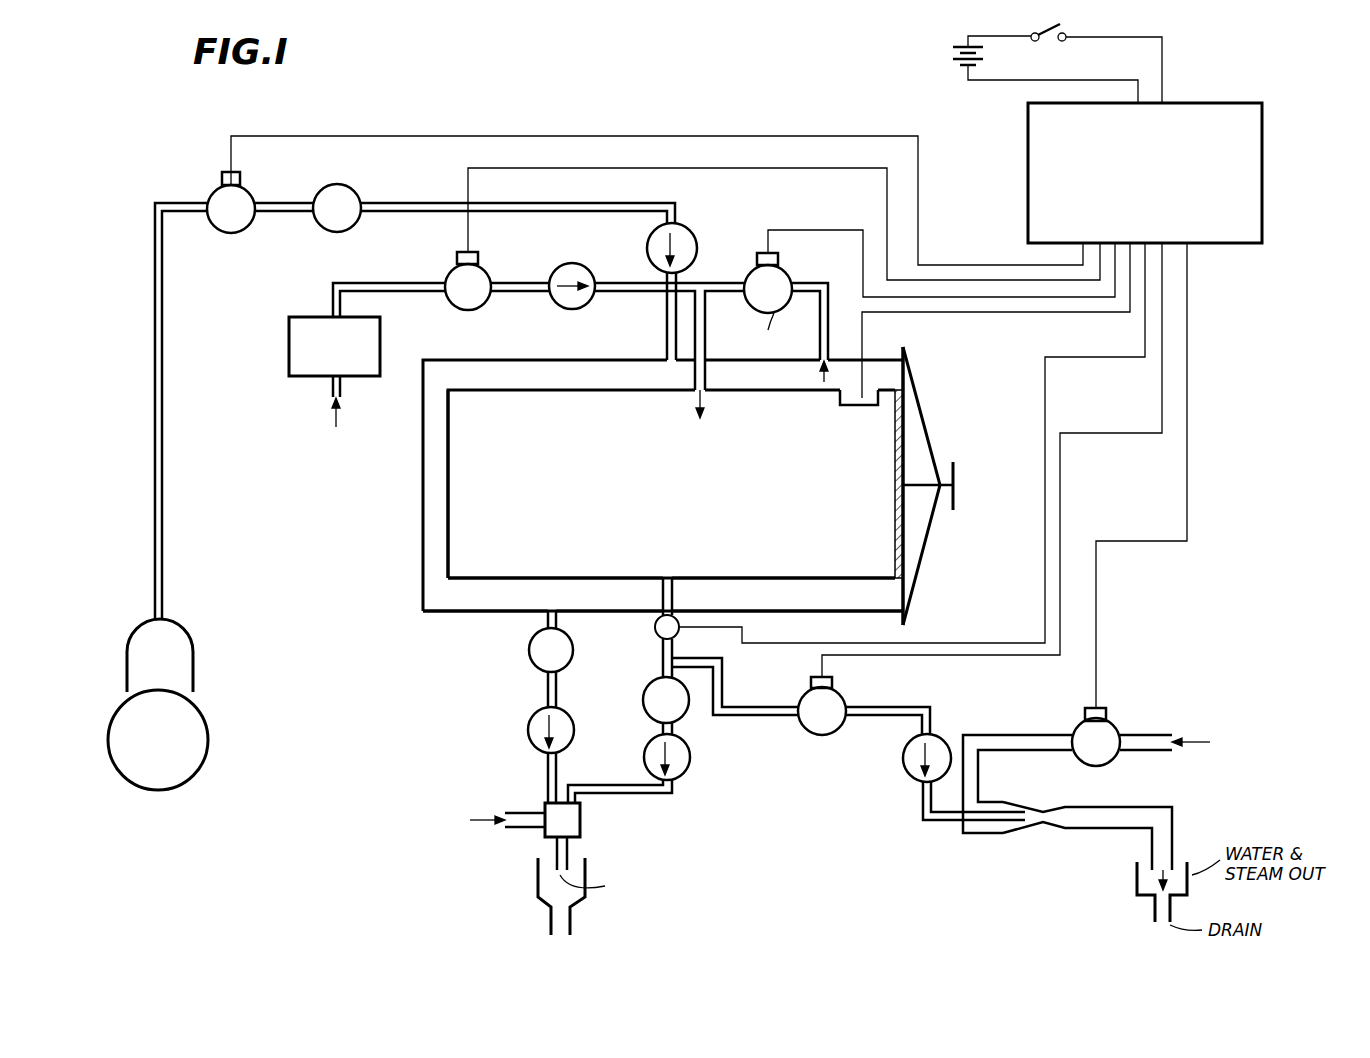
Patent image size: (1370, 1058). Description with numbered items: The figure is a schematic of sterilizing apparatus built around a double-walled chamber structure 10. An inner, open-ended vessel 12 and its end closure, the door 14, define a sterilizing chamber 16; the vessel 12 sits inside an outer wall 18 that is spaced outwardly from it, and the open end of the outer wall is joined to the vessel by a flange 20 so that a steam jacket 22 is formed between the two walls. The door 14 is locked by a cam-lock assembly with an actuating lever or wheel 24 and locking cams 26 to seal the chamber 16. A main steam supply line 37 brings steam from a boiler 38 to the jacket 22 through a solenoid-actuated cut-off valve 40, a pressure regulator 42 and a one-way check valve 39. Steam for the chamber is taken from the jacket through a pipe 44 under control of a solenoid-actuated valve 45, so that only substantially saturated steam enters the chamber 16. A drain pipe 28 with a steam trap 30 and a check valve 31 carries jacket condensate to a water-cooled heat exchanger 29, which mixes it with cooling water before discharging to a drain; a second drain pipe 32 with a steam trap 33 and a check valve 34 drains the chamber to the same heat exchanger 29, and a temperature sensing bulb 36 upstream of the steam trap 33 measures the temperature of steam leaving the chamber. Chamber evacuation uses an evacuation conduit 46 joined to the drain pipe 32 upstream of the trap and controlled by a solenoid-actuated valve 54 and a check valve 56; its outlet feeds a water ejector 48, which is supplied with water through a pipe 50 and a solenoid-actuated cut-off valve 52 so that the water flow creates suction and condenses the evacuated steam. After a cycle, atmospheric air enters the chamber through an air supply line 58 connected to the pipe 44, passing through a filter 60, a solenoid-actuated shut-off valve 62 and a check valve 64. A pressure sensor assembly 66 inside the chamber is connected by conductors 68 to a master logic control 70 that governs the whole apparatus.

The double-walled chamber structure 10 is at (415, 499).
The inner open-ended vessel 12 is at (716, 576).
The door 14 is at (893, 465).
The sterilizing chamber 16 is at (650, 465).
The outer wall 18 is at (462, 618).
The flange 20 is at (897, 596).
The steam jacket 22 is at (772, 601).
The actuating lever or wheel 24 is at (957, 465).
The locking cams 26 is at (928, 422).
The drain pipe 28 is at (546, 690).
The water-cooled heat exchanger 29 is at (553, 832).
The steam trap 30 is at (529, 652).
The one-way check valve 31 is at (530, 740).
The second drain pipe 32 is at (652, 745).
The steam trap 33 is at (650, 690).
The one-way check valve 34 is at (686, 780).
The temperature sensing bulb 36 is at (655, 632).
The main steam supply line 37 is at (165, 440).
The boiler 38 is at (185, 662).
The one-way check valve 39 is at (695, 232).
The solenoid-actuated cut-off valve 40 is at (253, 182).
The pressure regulator 42 is at (358, 188).
The pipe 44 is at (796, 284).
The solenoid-actuated valve 45 is at (780, 331).
The evacuation conduit 46 is at (728, 720).
The water ejector 48 is at (1003, 830).
The water supply pipe 50 is at (1028, 733).
The solenoid-actuated cut-off valve 52 is at (1115, 728).
The solenoid-actuated valve 54 is at (818, 737).
The one-way check valve 56 is at (910, 783).
The air supply line 58 is at (352, 283).
The filter 60 is at (288, 353).
The solenoid-actuated shut-off valve 62 is at (487, 275).
The one-way check valve 64 is at (590, 272).
The pressure sensor assembly 66 is at (847, 406).
The conductors 68 is at (958, 312).
The master logic control 70 is at (1263, 216).